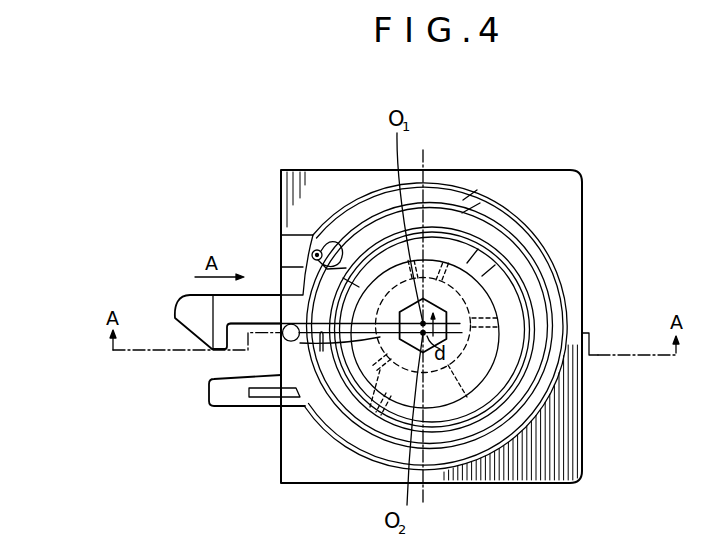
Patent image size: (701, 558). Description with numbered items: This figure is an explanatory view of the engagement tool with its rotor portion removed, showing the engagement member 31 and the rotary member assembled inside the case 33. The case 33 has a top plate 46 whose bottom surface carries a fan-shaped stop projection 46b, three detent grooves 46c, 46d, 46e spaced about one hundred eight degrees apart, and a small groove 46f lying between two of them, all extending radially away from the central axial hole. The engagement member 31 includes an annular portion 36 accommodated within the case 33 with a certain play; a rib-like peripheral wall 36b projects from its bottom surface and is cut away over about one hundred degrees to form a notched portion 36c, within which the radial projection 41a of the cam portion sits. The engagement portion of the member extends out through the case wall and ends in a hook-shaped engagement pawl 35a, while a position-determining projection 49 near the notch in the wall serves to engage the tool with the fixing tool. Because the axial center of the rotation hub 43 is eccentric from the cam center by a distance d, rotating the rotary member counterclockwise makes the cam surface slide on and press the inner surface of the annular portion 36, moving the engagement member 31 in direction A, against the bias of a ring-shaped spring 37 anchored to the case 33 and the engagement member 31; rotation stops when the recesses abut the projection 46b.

The engagement member 31 is at (263, 303).
The case 33 is at (570, 212).
The engagement pawl 35a is at (188, 317).
The annular portion 36 is at (445, 247).
The peripheral wall 36b is at (513, 372).
The notched portion 36c is at (457, 240).
The ring-shaped spring 37 is at (399, 262).
The radial projection 41a is at (497, 262).
The rotation hub 43 is at (305, 346).
The top plate 46 is at (578, 432).
The fan-shaped projection 46b is at (375, 412).
The detent groove 46c is at (498, 320).
The detent groove 46d is at (397, 266).
The detent groove 46e is at (368, 370).
The small groove 46f is at (452, 258).
The position-determining projection 49 is at (225, 397).